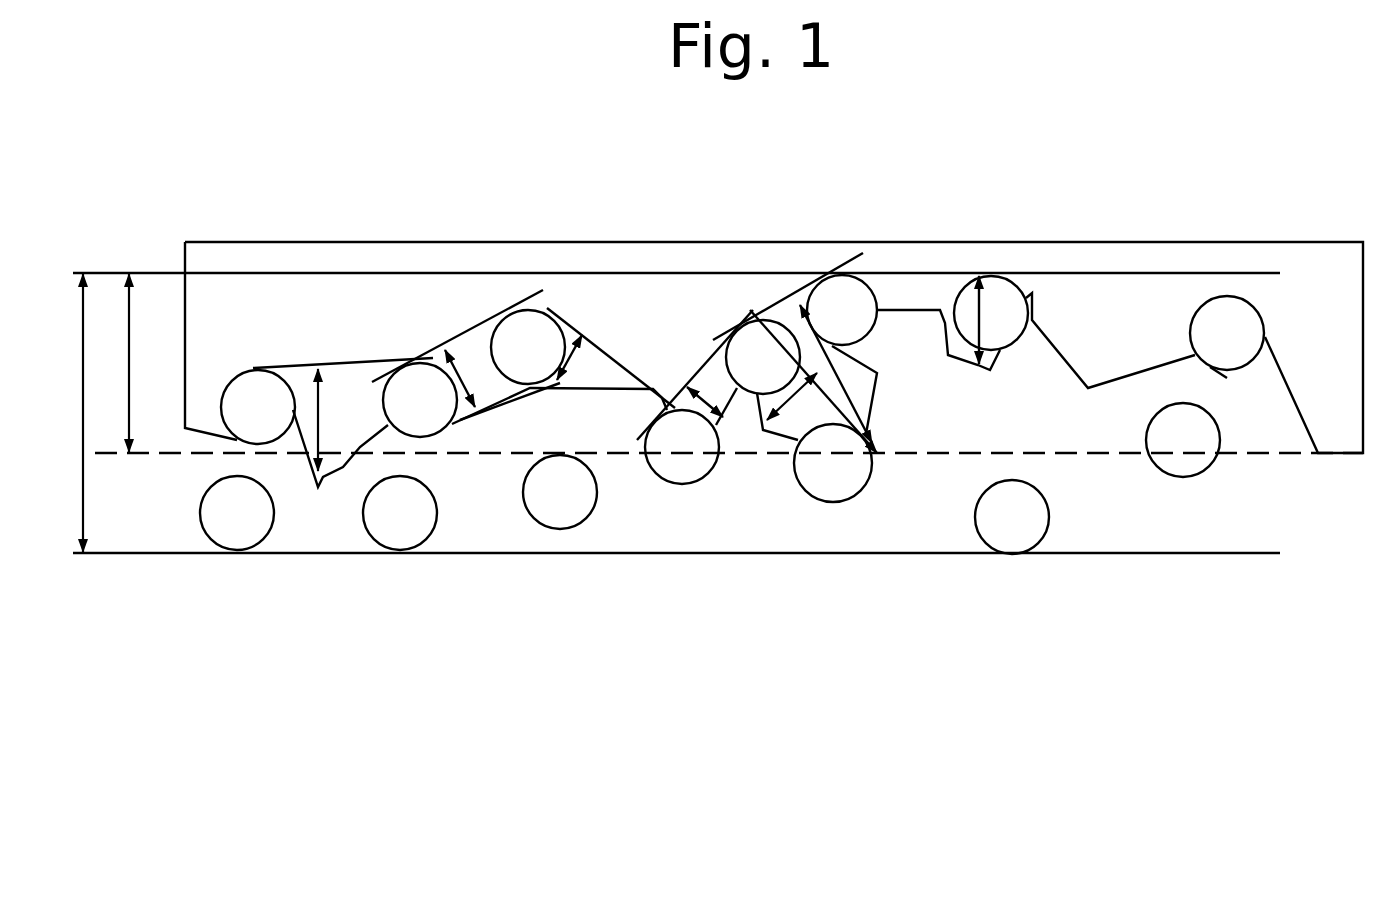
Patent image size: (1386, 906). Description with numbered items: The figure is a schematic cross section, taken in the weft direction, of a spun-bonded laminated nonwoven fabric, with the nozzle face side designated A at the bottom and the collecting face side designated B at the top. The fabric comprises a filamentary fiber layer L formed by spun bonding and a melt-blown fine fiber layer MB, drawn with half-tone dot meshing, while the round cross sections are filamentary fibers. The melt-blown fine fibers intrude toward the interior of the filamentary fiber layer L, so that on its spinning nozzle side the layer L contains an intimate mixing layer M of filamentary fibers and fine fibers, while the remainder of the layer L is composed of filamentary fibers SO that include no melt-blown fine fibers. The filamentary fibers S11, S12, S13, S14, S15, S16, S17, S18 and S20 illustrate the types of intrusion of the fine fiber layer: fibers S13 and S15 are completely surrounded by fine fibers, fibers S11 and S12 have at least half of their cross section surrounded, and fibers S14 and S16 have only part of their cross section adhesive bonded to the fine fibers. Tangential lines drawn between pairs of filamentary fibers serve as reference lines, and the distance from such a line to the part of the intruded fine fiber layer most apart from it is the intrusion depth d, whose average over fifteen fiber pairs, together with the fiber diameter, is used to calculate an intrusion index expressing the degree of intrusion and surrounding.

The melt-blown fine fiber layer MB is at (1307, 252).
The nozzle face side A is at (676, 585).
The collecting face side B is at (676, 225).
The filamentary fiber layer L is at (70, 413).
The intimate mixing layer M is at (115, 363).
The intrusion depth d is at (567, 420).
The filamentary fiber S11 is at (258, 407).
The filamentary fiber S12 is at (420, 400).
The filamentary fiber S13 is at (528, 347).
The filamentary fiber S14 is at (682, 447).
The filamentary fiber S15 is at (763, 357).
The filamentary fiber S16 is at (833, 463).
The filamentary fiber S17 is at (842, 310).
The filamentary fiber S18 is at (991, 313).
The filamentary fiber S20 is at (1227, 333).
The filamentary fibers not including melt-blown fine fibers SO is at (710, 478).